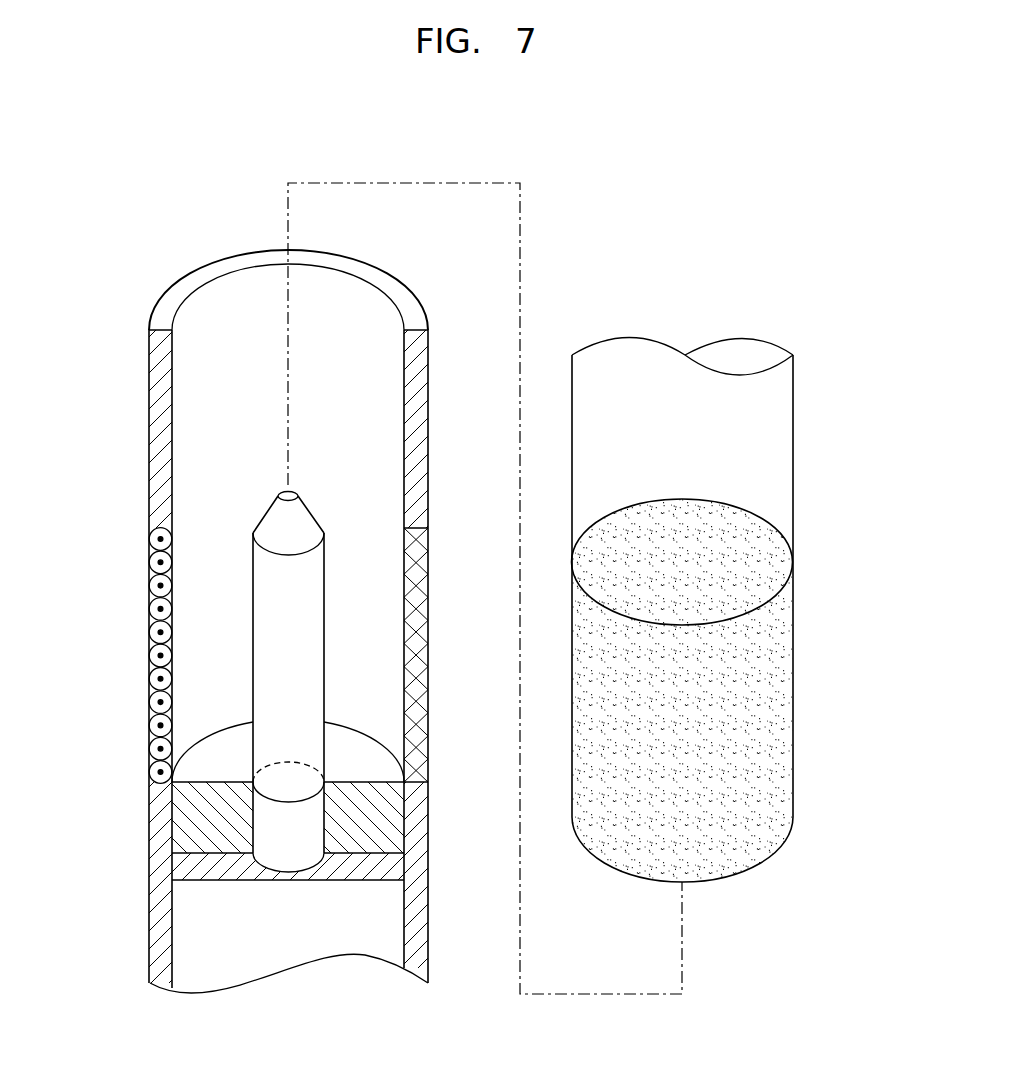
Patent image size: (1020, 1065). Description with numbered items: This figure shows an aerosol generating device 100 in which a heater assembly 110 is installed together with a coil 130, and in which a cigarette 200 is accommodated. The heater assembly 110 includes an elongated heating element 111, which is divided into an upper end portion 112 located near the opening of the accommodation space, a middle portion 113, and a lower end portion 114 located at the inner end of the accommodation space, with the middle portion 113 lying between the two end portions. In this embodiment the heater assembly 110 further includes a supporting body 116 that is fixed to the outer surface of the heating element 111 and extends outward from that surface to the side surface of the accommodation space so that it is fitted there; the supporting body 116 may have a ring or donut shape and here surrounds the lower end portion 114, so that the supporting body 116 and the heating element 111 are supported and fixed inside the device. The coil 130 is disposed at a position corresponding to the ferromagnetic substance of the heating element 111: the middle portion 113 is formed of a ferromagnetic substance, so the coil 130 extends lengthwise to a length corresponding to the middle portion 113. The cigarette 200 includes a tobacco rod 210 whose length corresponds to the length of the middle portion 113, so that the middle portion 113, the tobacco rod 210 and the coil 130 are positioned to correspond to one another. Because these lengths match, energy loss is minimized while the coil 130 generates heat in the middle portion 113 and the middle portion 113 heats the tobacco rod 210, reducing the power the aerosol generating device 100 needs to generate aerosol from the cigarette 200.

The aerosol generating device 100 is at (148, 360).
The heater assembly 110 is at (205, 665).
The heating element 111 is at (205, 682).
The upper end portion 112 is at (270, 530).
The middle portion 113 is at (262, 620).
The lower end portion 114 is at (275, 820).
The supporting body 116 is at (173, 842).
The coil 130 is at (415, 561).
The cigarette 200 is at (810, 427).
The tobacco rod 210 is at (768, 695).